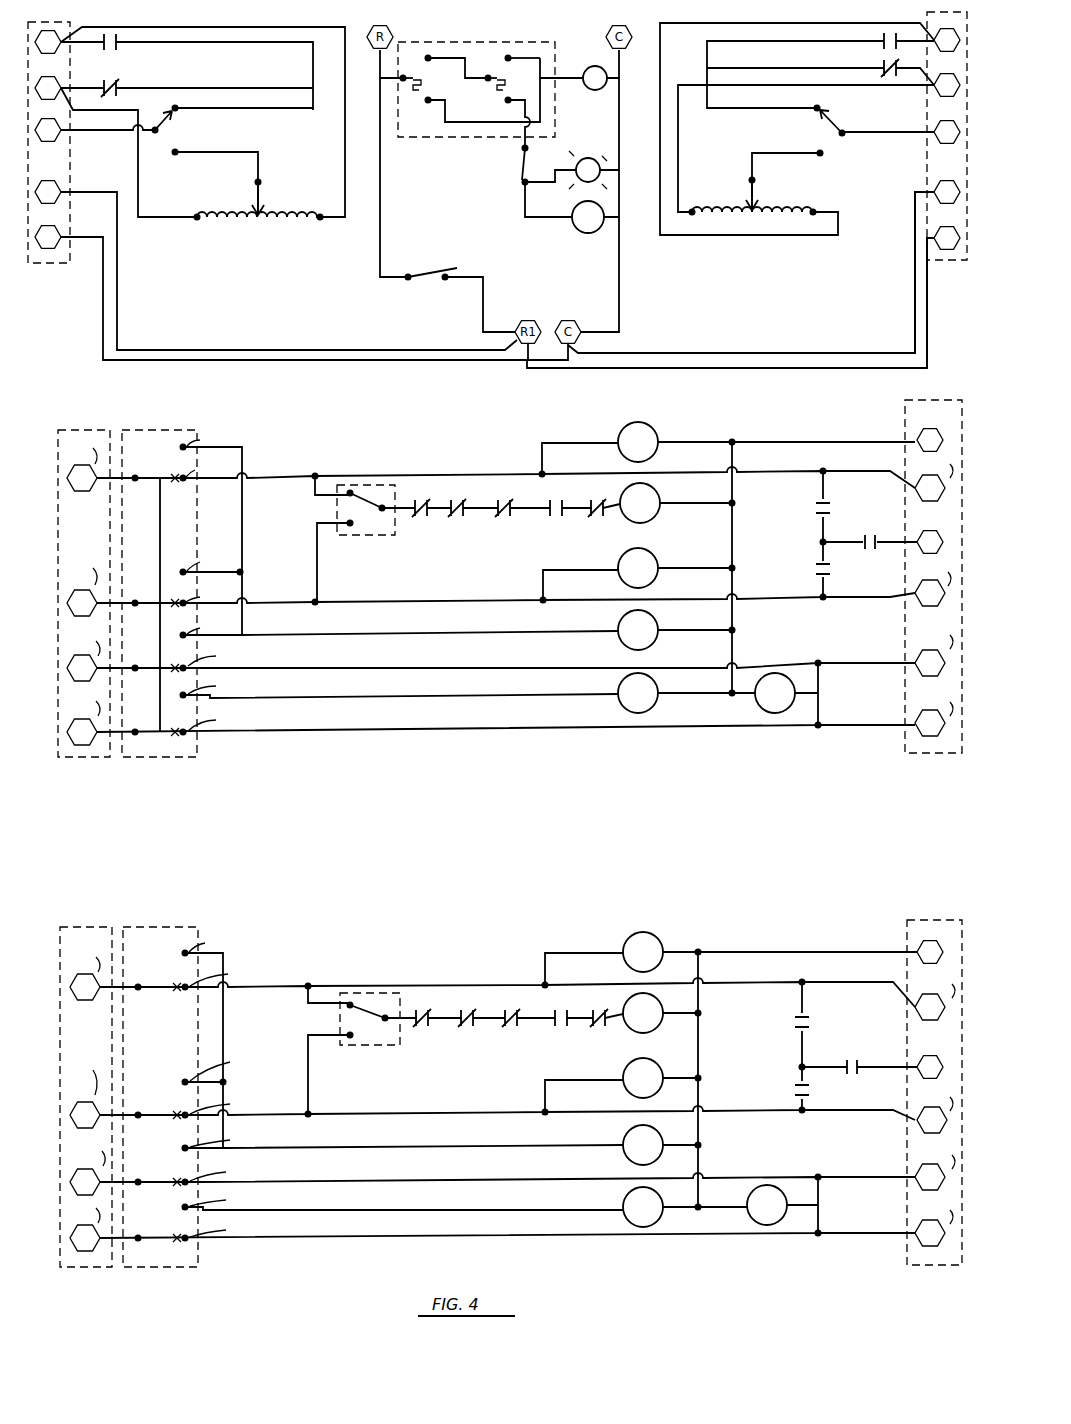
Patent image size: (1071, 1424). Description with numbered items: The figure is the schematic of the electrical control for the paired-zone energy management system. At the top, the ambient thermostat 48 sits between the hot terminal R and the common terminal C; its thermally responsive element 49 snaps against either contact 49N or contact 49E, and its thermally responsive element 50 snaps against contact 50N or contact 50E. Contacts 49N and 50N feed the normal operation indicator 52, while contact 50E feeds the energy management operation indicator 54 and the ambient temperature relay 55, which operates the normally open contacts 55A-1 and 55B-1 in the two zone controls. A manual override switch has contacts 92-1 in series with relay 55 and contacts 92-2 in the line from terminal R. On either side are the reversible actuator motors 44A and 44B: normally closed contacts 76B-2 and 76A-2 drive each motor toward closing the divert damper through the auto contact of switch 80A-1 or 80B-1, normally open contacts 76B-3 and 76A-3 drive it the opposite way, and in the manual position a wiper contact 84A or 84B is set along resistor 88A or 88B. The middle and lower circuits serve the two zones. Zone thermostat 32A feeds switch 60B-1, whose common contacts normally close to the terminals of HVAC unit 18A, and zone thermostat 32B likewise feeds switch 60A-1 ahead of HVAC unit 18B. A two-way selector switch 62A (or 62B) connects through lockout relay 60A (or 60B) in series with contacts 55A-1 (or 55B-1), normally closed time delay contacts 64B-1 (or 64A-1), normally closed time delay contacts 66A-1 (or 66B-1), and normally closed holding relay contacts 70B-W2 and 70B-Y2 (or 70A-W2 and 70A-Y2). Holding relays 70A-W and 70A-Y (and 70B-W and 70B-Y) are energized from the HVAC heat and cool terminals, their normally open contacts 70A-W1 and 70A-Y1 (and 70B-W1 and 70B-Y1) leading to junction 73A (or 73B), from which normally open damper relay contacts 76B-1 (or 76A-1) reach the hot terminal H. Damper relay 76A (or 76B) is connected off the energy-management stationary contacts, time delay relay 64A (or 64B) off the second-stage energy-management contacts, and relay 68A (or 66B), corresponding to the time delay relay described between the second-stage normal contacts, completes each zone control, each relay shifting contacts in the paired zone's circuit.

The actuator motor 44A is at (48, 266).
The normally open contacts 76B-3 is at (112, 50).
The normally closed relay contacts 76B-2 is at (130, 70).
The switch 80A-1 is at (165, 125).
The wiper contact 84A is at (262, 183).
The resistor 88A is at (258, 225).
The ambient thermostat 48 is at (440, 140).
The thermally responsive element 49 is at (405, 88).
The contact 49E is at (430, 56).
The contact 49N is at (471, 96).
The thermally responsive element 50 is at (490, 74).
The contact 50N is at (505, 50).
The contact 50E is at (522, 108).
The normal operation indicator 52 is at (584, 68).
The energy management operation indicator 54 is at (592, 156).
The ambient temperature relay 55 is at (594, 232).
The manual switch contacts 92-1 is at (515, 165).
The manual switch contacts 92-2 is at (425, 270).
The actuator motor 44B is at (956, 268).
The normally open contacts 76A-3 is at (883, 34).
The normally closed relay contacts 76A-2 is at (883, 66).
The switch 80B-1 is at (822, 120).
The wiper contact 84B is at (757, 185).
The resistor 88B is at (705, 205).
The zone thermostat 32A is at (83, 428).
The switch 60B-1 is at (170, 428).
The HVAC unit 18A is at (905, 405).
The two-way selector switch 62A is at (368, 537).
The normally closed time delay relay contacts 66A-1 is at (424, 498).
The normally closed contacts 70B-W2 is at (459, 518).
The normally closed contacts 70B-Y2 is at (503, 518).
The normally open ambient temperature relay contacts 55A-1 is at (550, 497).
The normally closed time delay relay contacts 64B-1 is at (598, 518).
The lockout relay 60A is at (655, 517).
The holding relay 70A-W is at (620, 435).
The relay coil 70A-Y is at (656, 562).
The damper relay 76A is at (618, 621).
The time delay relay 64A is at (618, 683).
The relay coil 68A is at (760, 712).
The normally open contacts 70A-W1 is at (815, 506).
The capacitor 70A-Y1 is at (815, 572).
The junction 73A is at (817, 542).
The normally open contacts 76B-1 is at (880, 522).
The zone thermostat 32B is at (83, 925).
The switch 60A-1 is at (170, 925).
The HVAC unit 18B is at (908, 920).
The two-way selector switch 62B is at (372, 1047).
The normally closed time delay relay contacts 66B-1 is at (425, 1008).
The normally closed contacts 70A-W2 is at (466, 1028).
The normally closed contacts 70A-Y2 is at (510, 1028).
The normally open ambient temperature relay contacts 55B-1 is at (555, 1007).
The normally closed time delay relay contacts 64A-1 is at (598, 1030).
The lockout relay 60B is at (648, 1032).
The holding relay 70B-W is at (663, 925).
The relay coil 70B-Y is at (630, 1092).
The damper relay 76B is at (623, 1135).
The time delay relay 64B is at (623, 1200).
The time delay relay 66B is at (752, 1222).
The normally open contacts 70B-W1 is at (795, 1017).
The capacitor 70B-Y1 is at (795, 1090).
The junction 73B is at (796, 1065).
The normally open contacts 76A-1 is at (873, 1040).